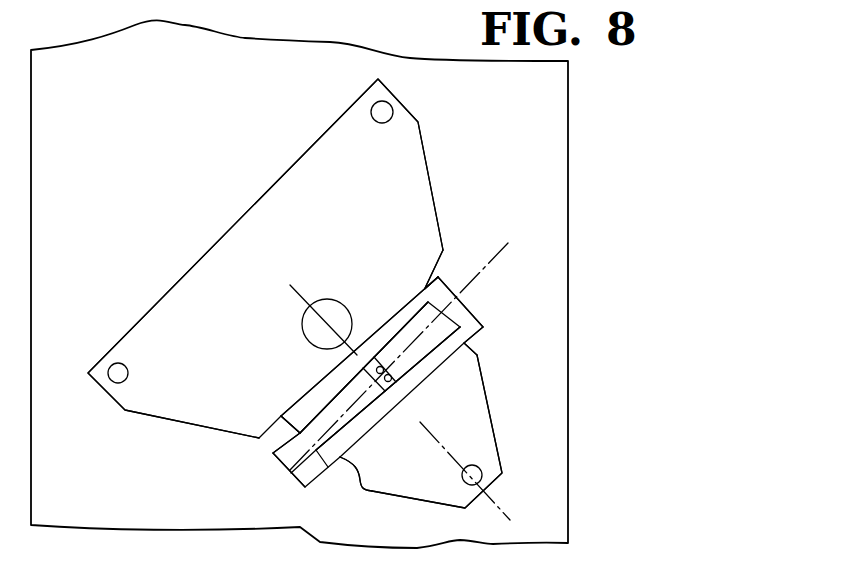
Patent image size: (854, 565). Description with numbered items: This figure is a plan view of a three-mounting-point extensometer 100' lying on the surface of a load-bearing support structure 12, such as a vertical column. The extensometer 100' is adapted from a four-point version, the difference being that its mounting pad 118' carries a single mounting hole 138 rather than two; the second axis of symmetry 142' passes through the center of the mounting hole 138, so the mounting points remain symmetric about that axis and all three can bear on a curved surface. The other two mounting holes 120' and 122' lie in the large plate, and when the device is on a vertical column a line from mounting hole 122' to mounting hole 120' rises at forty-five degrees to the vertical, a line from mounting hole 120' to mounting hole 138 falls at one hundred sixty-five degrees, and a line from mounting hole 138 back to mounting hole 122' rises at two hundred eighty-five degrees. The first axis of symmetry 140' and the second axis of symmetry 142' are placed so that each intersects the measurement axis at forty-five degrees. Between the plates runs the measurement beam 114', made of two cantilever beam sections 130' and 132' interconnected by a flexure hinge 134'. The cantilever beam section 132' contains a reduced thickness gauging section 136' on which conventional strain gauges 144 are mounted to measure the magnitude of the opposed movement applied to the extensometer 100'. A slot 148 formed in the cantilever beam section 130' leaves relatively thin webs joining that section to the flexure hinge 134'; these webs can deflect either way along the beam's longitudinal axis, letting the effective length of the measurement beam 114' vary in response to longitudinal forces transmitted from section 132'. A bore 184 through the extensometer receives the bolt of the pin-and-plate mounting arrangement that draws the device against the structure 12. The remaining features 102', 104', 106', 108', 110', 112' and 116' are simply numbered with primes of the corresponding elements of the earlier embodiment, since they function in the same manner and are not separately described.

The load-bearing support structure 12 is at (553, 181).
The extensometer 100' is at (295, 293).
The notch 102' is at (404, 267).
The notch 104' is at (261, 455).
The notch 106' is at (503, 343).
The notch 108' is at (368, 495).
The end edge 110' is at (490, 302).
The end edge 112' is at (301, 484).
The measurement beam 114' is at (311, 346).
The first plate 116' is at (265, 258).
The mounting pad 118' is at (437, 431).
The mounting hole 120' is at (340, 107).
The mounting hole 122' is at (98, 351).
The cantilever beam section 130' is at (370, 355).
The cantilever beam section 132' is at (267, 416).
The flexure hinge 134' is at (390, 397).
The reduced thickness gauging section 136' is at (367, 387).
The mounting hole 138 is at (482, 473).
The first axis of symmetry 140' is at (399, 337).
The second axis of symmetry 142' is at (517, 471).
The strain gauges 144 is at (340, 389).
The slot 148 is at (393, 381).
The bore 184 is at (322, 300).